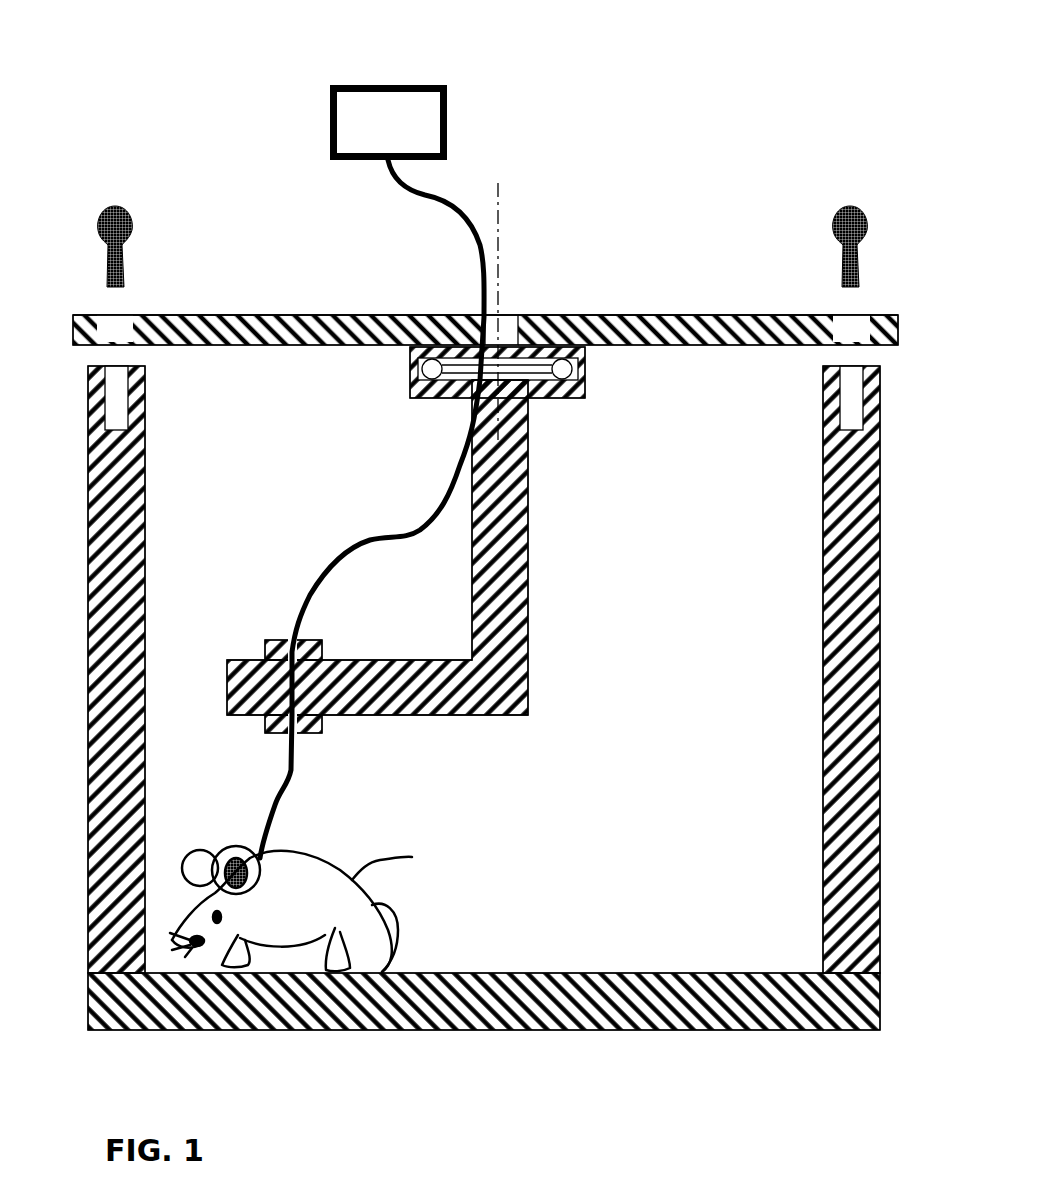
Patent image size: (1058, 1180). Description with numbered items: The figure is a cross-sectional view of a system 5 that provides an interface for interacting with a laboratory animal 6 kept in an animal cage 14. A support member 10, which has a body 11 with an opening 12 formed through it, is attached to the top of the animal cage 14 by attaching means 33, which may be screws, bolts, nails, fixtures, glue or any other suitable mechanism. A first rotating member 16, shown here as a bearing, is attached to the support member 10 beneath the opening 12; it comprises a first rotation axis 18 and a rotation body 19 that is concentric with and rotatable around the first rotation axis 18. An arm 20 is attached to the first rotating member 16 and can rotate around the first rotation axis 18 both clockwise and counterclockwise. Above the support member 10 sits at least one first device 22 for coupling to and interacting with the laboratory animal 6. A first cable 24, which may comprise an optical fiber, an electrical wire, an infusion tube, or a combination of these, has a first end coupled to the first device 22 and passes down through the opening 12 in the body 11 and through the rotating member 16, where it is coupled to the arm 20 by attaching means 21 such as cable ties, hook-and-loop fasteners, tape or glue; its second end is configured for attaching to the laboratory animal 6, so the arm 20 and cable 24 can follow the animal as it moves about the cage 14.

The system 5 is at (677, 88).
The laboratory animal 6 is at (350, 882).
The support member 10 is at (318, 312).
The body 11 is at (628, 315).
The opening 12 is at (510, 315).
The animal cage 14 is at (150, 540).
The first rotating member 16 is at (590, 390).
The first rotation axis 18 is at (500, 237).
The rotation body 19 is at (410, 397).
The arm 20 is at (530, 580).
The attaching means 21 is at (265, 645).
The first device 22 is at (447, 128).
The first cable 24 is at (330, 568).
The attaching means 33 is at (118, 208).